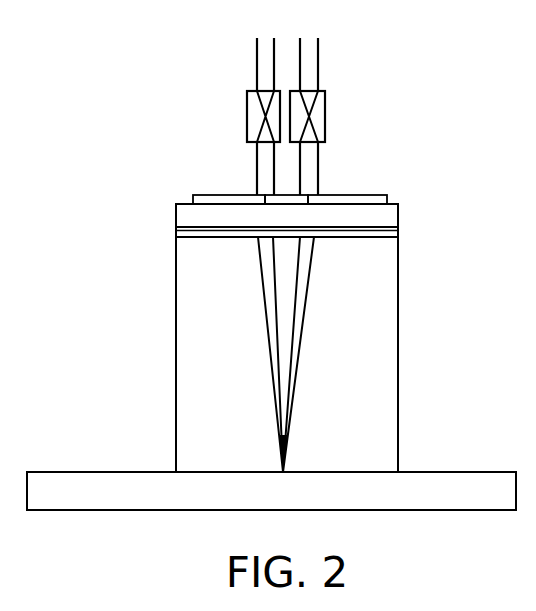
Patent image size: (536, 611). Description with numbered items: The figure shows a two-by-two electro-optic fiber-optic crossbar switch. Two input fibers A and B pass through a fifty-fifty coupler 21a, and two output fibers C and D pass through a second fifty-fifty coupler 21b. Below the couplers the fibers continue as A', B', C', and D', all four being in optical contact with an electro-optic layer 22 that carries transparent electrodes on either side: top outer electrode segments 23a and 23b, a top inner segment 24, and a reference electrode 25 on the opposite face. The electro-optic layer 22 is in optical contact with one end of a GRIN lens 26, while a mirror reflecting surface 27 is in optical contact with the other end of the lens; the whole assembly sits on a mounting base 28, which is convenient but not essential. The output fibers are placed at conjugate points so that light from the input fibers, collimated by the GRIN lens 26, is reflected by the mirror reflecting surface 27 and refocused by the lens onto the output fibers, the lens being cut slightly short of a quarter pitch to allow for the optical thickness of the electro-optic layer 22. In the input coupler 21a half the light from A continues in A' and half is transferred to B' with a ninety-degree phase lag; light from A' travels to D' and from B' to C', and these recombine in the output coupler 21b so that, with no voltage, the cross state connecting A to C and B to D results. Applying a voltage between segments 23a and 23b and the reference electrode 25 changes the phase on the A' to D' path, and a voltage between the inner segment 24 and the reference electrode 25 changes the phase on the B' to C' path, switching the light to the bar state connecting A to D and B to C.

The input fiber A is at (232, 57).
The input fiber B is at (249, 64).
The output fiber C is at (325, 64).
The output fiber D is at (343, 60).
The 50:50 coupler 21a is at (247, 120).
The second 50:50 coupler 21b is at (325, 120).
The fiber A' is at (234, 162).
The fiber B' is at (247, 168).
The fiber C' is at (326, 168).
The fiber D' is at (344, 162).
The top outer electrode segment 23a is at (198, 203).
The top outer electrode segment 23b is at (378, 203).
The top inner electrode segment 24 is at (287, 198).
The electro-optic layer 22 is at (398, 217).
The reference electrode 25 is at (208, 238).
The GRIN lens 26 is at (287, 354).
The mirror reflecting surface 27 is at (208, 471).
The mounting base 28 is at (271, 491).